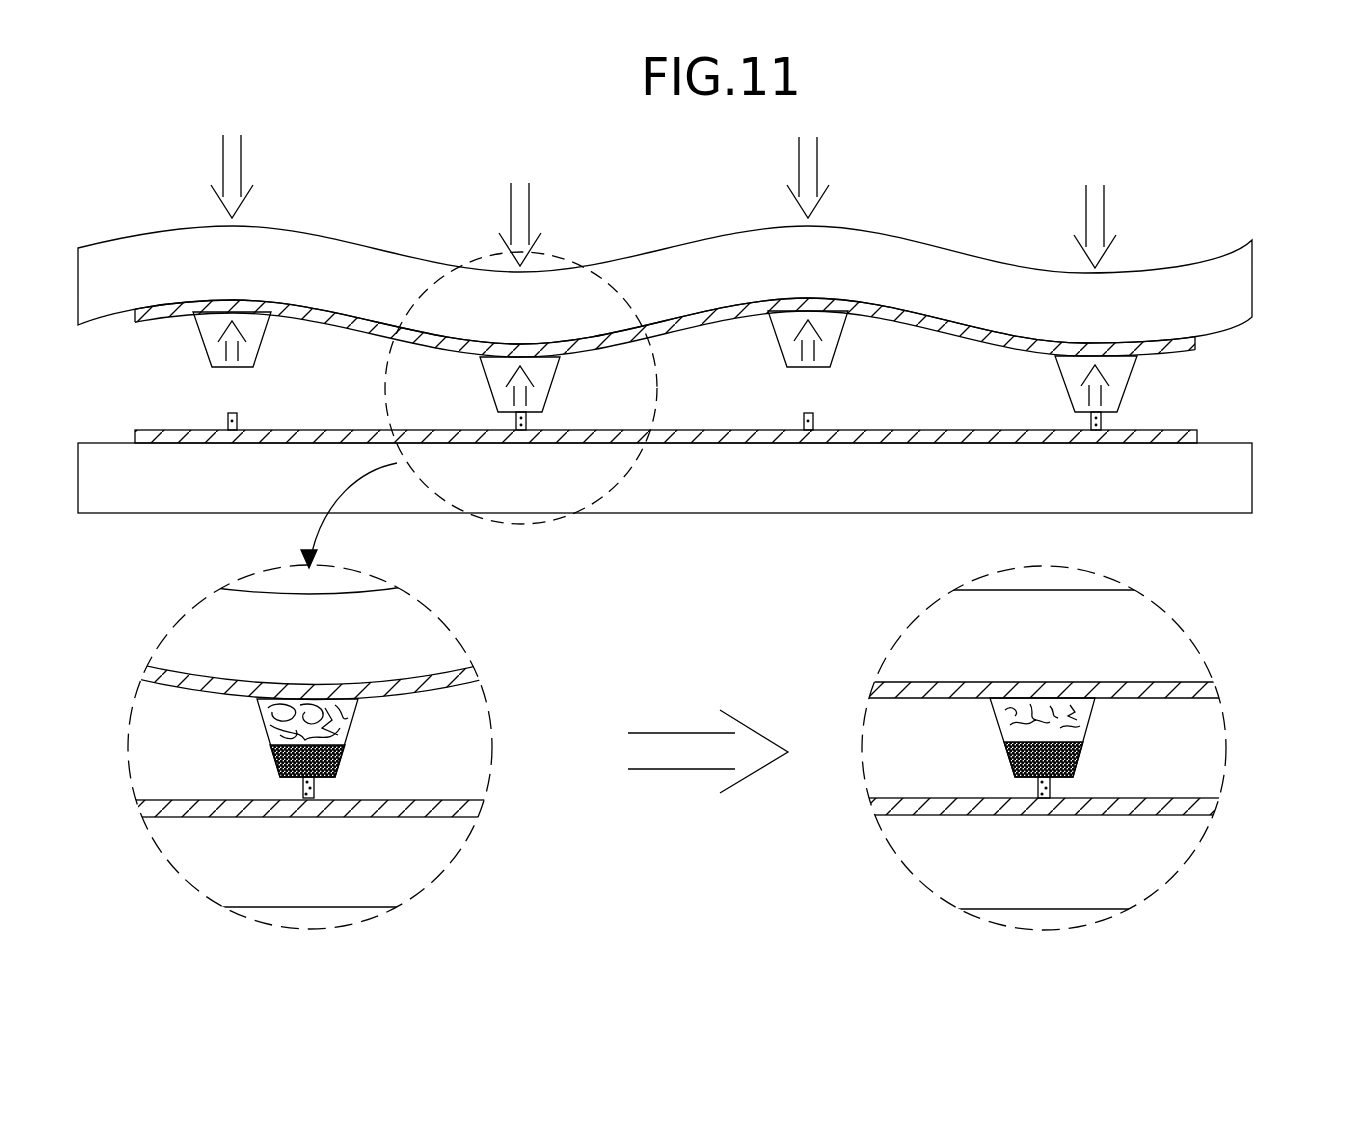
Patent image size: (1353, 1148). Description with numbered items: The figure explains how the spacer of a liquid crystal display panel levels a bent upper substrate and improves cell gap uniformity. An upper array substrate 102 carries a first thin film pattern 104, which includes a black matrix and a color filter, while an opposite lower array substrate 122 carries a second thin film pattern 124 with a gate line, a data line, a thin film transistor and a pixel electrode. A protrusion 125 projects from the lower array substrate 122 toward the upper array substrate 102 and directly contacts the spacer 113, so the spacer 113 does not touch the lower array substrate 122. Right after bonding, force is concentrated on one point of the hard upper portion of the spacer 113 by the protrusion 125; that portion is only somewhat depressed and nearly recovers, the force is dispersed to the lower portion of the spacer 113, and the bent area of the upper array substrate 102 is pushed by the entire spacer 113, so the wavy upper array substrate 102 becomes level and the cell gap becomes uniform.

The upper array substrate 102 is at (1242, 289).
The first thin film pattern 104 is at (1188, 343).
The spacer 113 is at (539, 370).
The lower array substrate 122 is at (1250, 490).
The second thin film pattern 124 is at (1180, 432).
The protrusion 125 is at (815, 418).